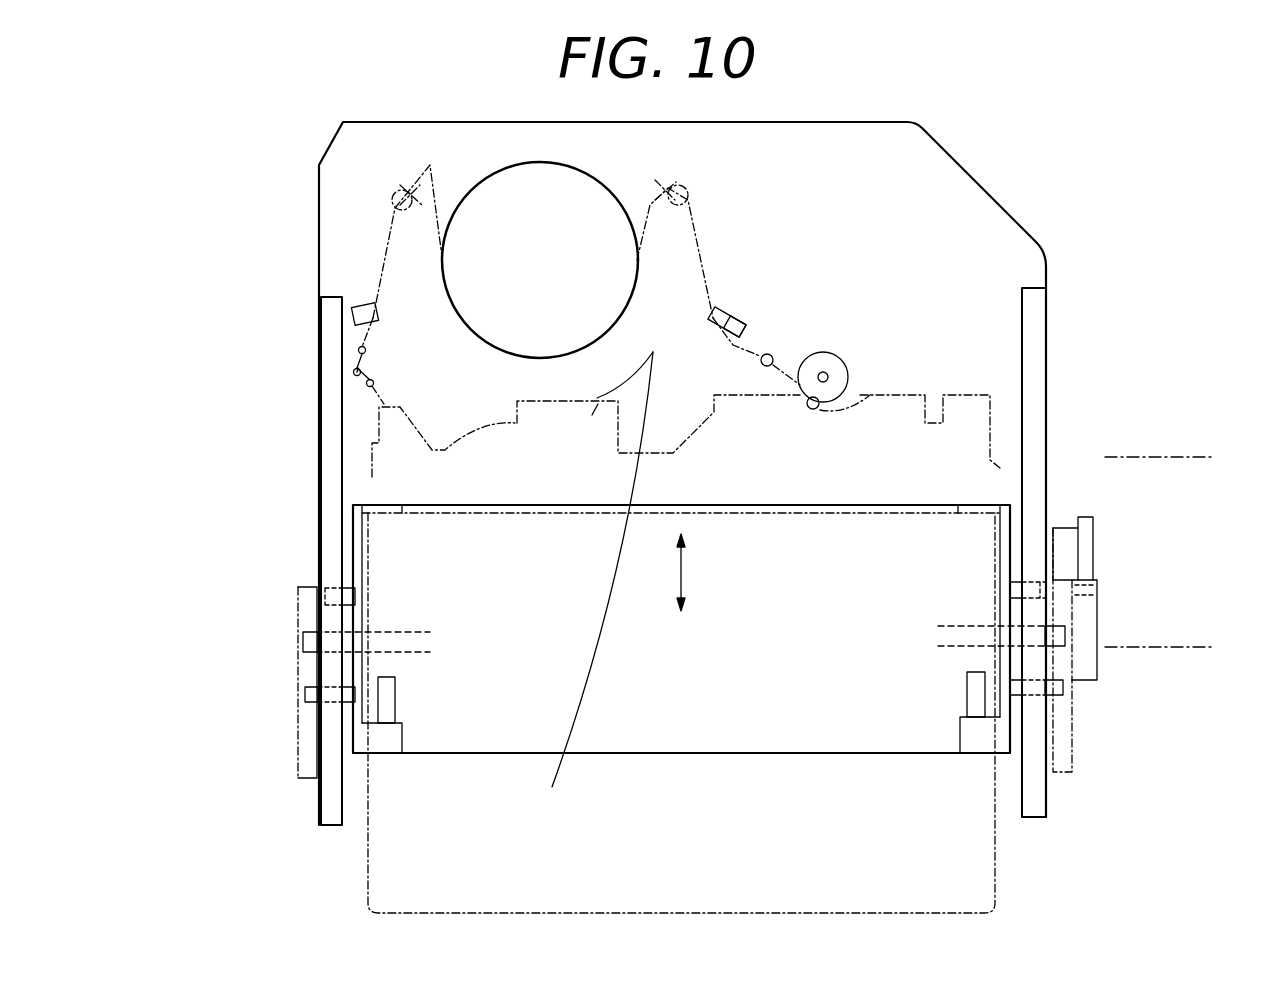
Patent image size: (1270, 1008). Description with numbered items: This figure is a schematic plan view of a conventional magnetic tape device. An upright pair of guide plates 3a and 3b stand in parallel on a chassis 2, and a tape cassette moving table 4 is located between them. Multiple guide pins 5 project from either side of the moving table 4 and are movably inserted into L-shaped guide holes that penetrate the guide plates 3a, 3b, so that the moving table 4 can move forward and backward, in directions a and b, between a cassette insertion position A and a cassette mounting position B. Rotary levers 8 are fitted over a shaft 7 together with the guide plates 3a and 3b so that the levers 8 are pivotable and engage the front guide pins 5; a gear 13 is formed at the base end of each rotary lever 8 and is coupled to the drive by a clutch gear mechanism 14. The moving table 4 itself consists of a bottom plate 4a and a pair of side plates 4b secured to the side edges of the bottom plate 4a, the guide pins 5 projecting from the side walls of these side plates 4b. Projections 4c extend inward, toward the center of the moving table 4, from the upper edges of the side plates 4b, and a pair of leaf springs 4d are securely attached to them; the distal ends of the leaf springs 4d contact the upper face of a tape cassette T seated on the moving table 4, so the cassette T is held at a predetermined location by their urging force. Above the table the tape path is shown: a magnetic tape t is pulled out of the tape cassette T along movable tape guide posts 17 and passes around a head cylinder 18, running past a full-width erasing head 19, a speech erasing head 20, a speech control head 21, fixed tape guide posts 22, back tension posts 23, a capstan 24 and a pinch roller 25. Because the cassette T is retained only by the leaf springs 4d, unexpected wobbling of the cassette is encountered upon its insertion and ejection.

The chassis 2 is at (982, 200).
The guide plate 3a is at (1045, 806).
The guide plate 3b is at (325, 802).
The tape cassette moving table 4 is at (568, 506).
The bottom plate 4a is at (683, 728).
The side plates 4b is at (360, 546).
The projections 4c is at (400, 738).
The leaf springs 4d is at (392, 690).
The guide pins 5 is at (332, 592).
The shaft 7 is at (303, 644).
The rotary levers 8 is at (298, 774).
The gear 13 is at (1098, 690).
The clutch gear mechanism 14 is at (1092, 536).
The movable tape guide posts 17 is at (418, 190).
The head cylinder 18 is at (487, 335).
The full-width erasing head 19 is at (362, 302).
The speech erasing head 20 is at (738, 310).
The speech control head 21 is at (750, 330).
The fixed tape guide posts 22 is at (366, 383).
The back tension posts 23 is at (380, 368).
The capstan 24 is at (814, 412).
The pinch roller 25 is at (842, 366).
The magnetic tape t is at (705, 240).
The tape cassette T is at (686, 558).
The direction a is at (671, 579).
The direction b is at (671, 538).
The cassette insertion position A is at (1170, 648).
The cassette mounting position B is at (1170, 457).